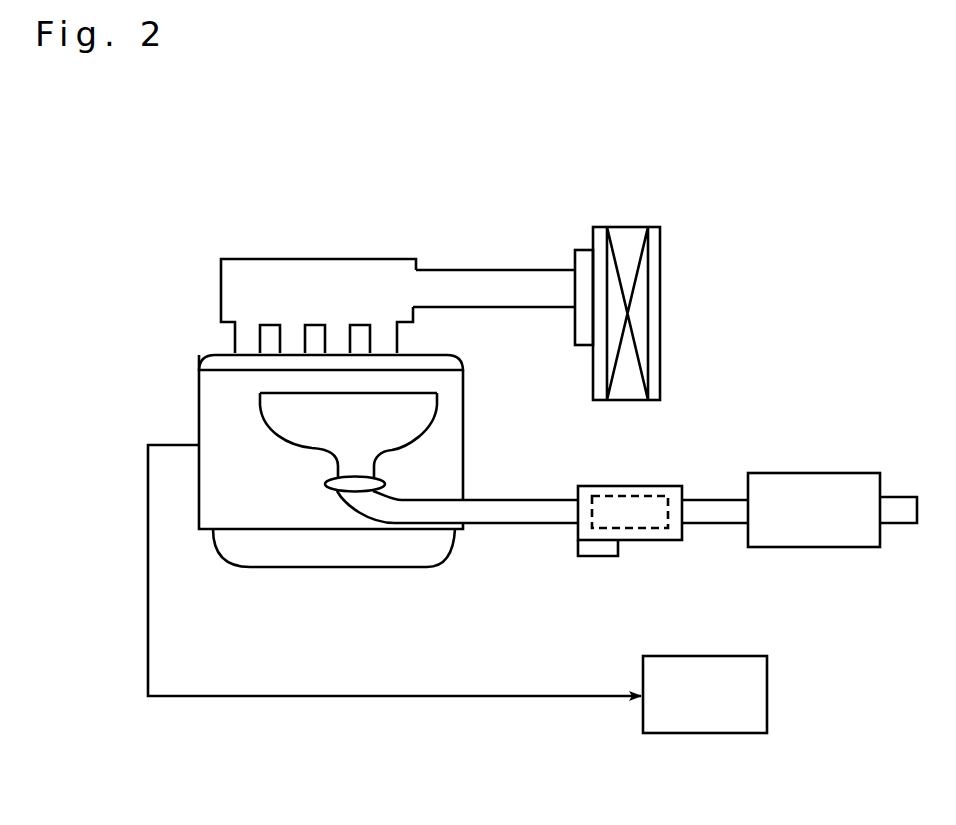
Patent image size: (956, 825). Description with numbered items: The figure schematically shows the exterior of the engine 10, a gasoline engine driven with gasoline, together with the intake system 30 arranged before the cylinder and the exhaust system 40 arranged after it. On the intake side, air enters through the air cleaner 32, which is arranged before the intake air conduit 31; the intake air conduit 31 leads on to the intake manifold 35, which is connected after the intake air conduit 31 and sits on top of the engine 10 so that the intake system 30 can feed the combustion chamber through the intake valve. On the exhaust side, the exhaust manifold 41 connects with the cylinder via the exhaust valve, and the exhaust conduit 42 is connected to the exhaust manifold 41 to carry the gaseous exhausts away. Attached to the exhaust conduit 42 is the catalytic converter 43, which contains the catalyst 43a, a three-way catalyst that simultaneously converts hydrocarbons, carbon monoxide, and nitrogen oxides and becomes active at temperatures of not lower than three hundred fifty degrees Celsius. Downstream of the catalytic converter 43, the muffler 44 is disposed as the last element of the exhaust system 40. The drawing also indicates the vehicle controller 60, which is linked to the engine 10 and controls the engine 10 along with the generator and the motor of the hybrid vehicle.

The engine 10 is at (270, 476).
The intake system 30 is at (454, 278).
The intake air conduit 31 is at (443, 268).
The air cleaner 32 is at (633, 226).
The intake manifold 35 is at (280, 268).
The exhaust system 40 is at (690, 517).
The exhaust manifold 41 is at (295, 437).
The exhaust conduit 42 is at (713, 507).
The catalytic converter 43 is at (638, 511).
The catalyst 43a is at (615, 497).
The muffler 44 is at (843, 473).
The vehicle controller 60 is at (767, 693).